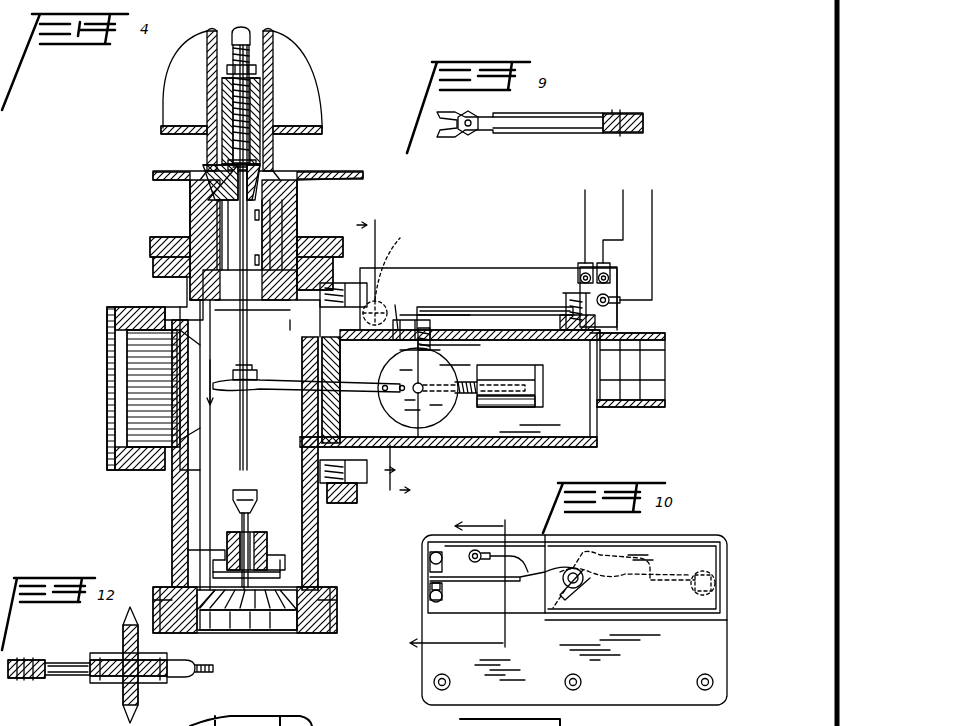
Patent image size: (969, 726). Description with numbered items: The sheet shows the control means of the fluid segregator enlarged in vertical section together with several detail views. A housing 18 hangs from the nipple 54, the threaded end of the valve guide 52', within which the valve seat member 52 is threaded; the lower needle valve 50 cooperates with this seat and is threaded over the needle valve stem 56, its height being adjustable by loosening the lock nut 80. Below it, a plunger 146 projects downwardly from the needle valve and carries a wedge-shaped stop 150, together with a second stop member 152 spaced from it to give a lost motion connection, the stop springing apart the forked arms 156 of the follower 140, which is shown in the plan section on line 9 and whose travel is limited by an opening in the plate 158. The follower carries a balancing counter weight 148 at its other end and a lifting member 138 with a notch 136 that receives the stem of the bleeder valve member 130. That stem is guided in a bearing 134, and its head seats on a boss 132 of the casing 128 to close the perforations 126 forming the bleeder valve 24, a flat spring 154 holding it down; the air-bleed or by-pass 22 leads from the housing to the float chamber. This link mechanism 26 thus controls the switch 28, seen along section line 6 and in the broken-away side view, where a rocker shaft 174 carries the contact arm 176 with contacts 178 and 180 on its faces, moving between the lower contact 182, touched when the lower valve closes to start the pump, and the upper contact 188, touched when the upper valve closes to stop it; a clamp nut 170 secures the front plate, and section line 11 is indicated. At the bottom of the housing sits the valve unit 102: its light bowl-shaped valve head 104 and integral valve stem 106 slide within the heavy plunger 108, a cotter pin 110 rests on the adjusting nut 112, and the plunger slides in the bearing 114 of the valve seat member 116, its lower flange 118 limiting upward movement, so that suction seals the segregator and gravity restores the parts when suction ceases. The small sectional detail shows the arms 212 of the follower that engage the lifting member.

In FIG. 4, the needle valve stem 56 is at (240, 42).
In FIG. 4, the lock nut 80 is at (250, 70).
In FIG. 4, the valve guide 52' is at (269, 82).
In FIG. 4, the valve seat member 52 is at (220, 105).
In FIG. 4, the lower needle valve 50 is at (262, 165).
In FIG. 4, the nipple 54 is at (188, 205).
In FIG. 4, the section line 6 is at (377, 358).
In FIG. 4, the rocker shaft 174 is at (400, 238).
In FIG. 10, the rocker shaft 174 is at (715, 578).
In FIG. 4, the boss 132 is at (400, 310).
In FIG. 4, the switch 28 is at (440, 267).
In FIG. 10, the switch 28 is at (636, 577).
In FIG. 4, the flat spring 154 is at (573, 280).
In FIG. 4, the perforations 126 is at (405, 320).
In FIG. 4, the bleeder valve member 130 is at (440, 310).
In FIG. 4, the bleeder valve 24 is at (505, 300).
In FIG. 4, the bearing 134 is at (430, 330).
In FIG. 4, the plunger 146 is at (247, 337).
In FIG. 4, the collar 152 is at (257, 375).
In FIG. 4, the notch 136 is at (420, 380).
In FIG. 4, the balancing counter weight 148 is at (520, 375).
In FIG. 4, the air-bleed or by-pass 22 is at (650, 385).
In FIG. 4, the link mechanism 26 is at (250, 392).
In FIG. 4, the follower 140 is at (310, 396).
In FIG. 4, the plate 158 is at (340, 410).
In FIG. 4, the lifting member 138 is at (445, 400).
In FIG. 4, the casing 128 is at (564, 391).
In FIG. 4, the housing 18 is at (252, 445).
In FIG. 4, the section line 9 is at (301, 420).
In FIG. 4, the stop 150 is at (257, 493).
In FIG. 4, the cotter pin 110 is at (248, 520).
In FIG. 4, the plunger 108 is at (195, 555).
In FIG. 4, the adjusting nut 112 is at (262, 540).
In FIG. 4, the bearing 114 is at (282, 555).
In FIG. 4, the lower flange 118 is at (215, 575).
In FIG. 4, the valve stem 106 is at (270, 570).
In FIG. 4, the valve unit 102 is at (247, 610).
In FIG. 4, the valve seat member 116 is at (322, 615).
In FIG. 4, the valve head 104 is at (245, 605).
In FIG. 9, the forked arms 156 is at (517, 118).
In FIG. 10, the section line 11 is at (450, 584).
In FIG. 10, the contact 188 is at (437, 545).
In FIG. 10, the contact 178 is at (430, 565).
In FIG. 10, the contact 182 is at (430, 590).
In FIG. 10, the contact 180 is at (442, 586).
In FIG. 10, the contact arm 176 is at (522, 582).
In FIG. 10, the clamp nut 170 is at (580, 568).
In FIG. 12, the arms 212 is at (75, 663).